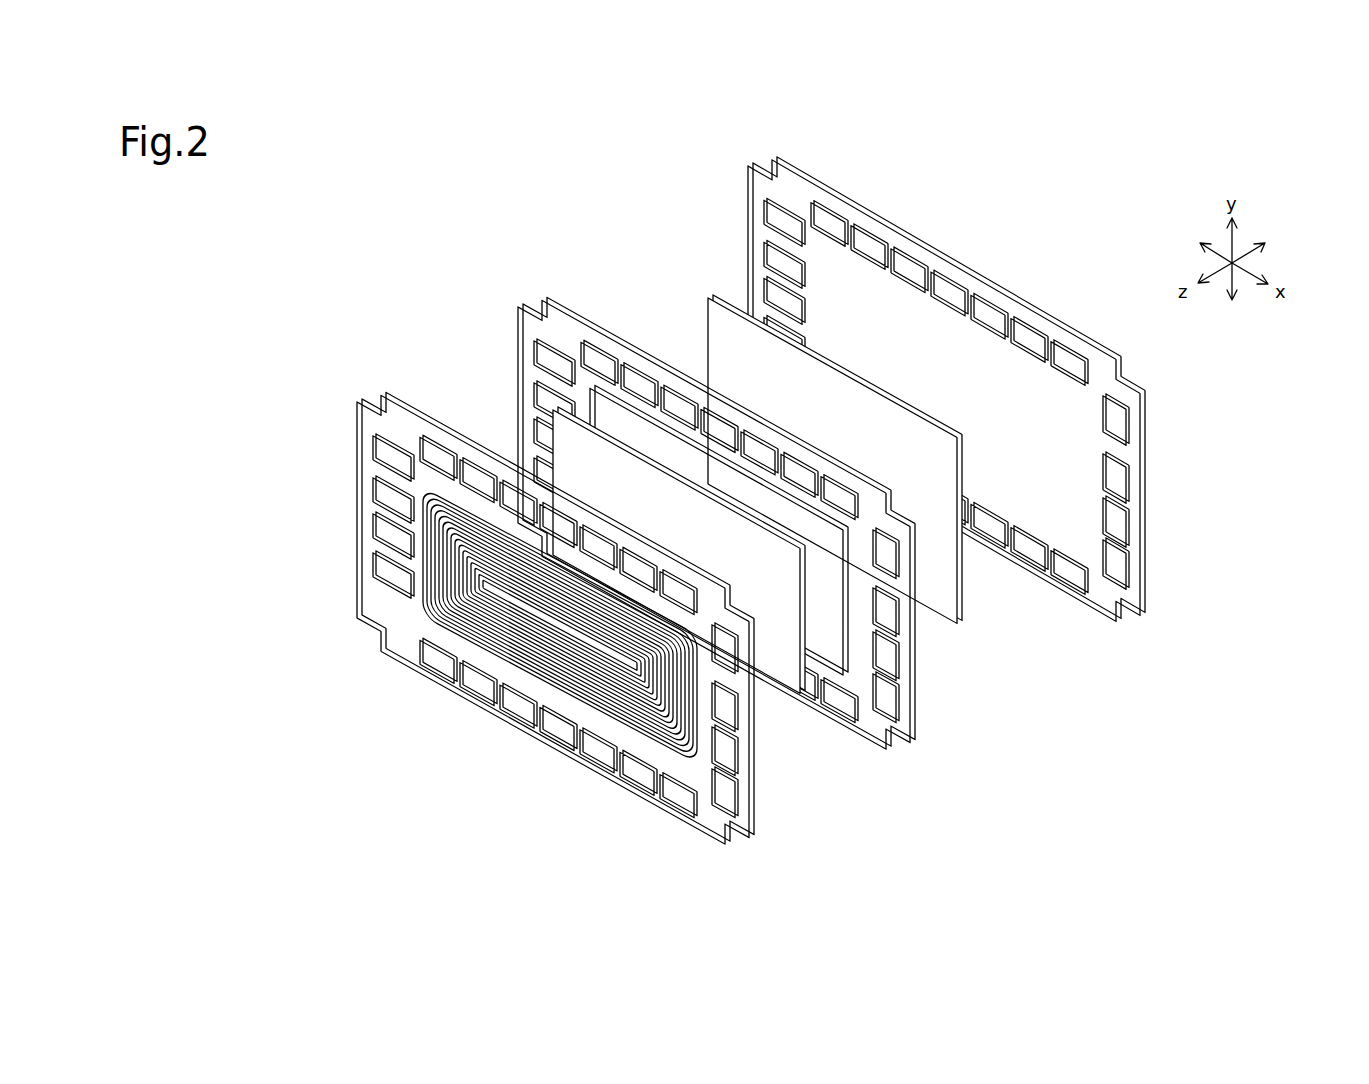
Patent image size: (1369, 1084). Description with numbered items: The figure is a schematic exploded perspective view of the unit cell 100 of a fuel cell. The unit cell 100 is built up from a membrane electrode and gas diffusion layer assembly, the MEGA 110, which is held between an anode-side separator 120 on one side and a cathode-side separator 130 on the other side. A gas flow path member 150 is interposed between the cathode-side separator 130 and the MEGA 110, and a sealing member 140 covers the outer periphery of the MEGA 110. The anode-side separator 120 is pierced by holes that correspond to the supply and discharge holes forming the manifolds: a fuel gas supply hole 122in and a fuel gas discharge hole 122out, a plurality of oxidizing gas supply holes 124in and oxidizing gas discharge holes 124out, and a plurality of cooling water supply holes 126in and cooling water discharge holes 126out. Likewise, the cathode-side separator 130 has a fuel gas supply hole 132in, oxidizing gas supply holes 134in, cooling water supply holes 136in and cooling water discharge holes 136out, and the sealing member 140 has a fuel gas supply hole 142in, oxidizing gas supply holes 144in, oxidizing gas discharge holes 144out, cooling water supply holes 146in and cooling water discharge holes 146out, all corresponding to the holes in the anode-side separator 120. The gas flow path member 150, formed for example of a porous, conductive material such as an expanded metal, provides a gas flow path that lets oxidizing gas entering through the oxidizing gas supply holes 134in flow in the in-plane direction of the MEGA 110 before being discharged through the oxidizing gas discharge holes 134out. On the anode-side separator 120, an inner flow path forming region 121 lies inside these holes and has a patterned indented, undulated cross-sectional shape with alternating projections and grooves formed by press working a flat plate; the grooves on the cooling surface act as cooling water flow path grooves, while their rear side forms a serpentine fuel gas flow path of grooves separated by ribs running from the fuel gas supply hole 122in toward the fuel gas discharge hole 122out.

The unit cell 100 is at (742, 503).
The membrane electrode and gas diffusion layer assembly (MEGA) 110 is at (806, 702).
The anode-side separator 120 is at (683, 815).
The inner flow path forming region 121 is at (424, 628).
The fuel gas discharge hole 122out is at (385, 568).
The oxidizing gas discharge holes 124out is at (517, 503).
The cooling water discharge holes 126out is at (385, 528).
The fuel gas supply hole 122in is at (724, 650).
The oxidizing gas supply holes 124in is at (677, 797).
The cooling water supply holes 126in is at (724, 793).
The cathode-side separator 130 is at (1102, 350).
The fuel gas supply hole 132in is at (1126, 422).
The oxidizing gas supply holes 134in is at (1070, 562).
The oxidizing gas discharge holes 134out is at (1069, 363).
The cooling water supply holes 136in is at (1114, 564).
The cooling water discharge holes 136out is at (783, 301).
The sealing member 140 is at (918, 708).
The fuel gas supply hole 142in is at (885, 545).
The oxidizing gas supply holes 144in is at (870, 706).
The oxidizing gas discharge holes 144out is at (679, 408).
The cooling water supply holes 146in is at (885, 698).
The cooling water discharge holes 146out is at (553, 442).
The gas flow path member 150 is at (855, 440).